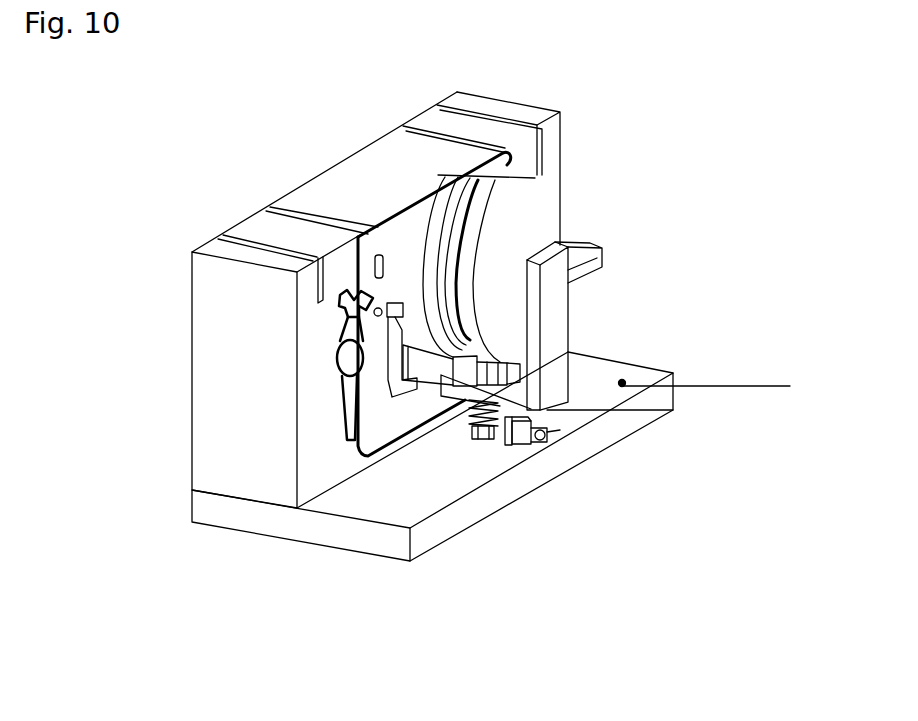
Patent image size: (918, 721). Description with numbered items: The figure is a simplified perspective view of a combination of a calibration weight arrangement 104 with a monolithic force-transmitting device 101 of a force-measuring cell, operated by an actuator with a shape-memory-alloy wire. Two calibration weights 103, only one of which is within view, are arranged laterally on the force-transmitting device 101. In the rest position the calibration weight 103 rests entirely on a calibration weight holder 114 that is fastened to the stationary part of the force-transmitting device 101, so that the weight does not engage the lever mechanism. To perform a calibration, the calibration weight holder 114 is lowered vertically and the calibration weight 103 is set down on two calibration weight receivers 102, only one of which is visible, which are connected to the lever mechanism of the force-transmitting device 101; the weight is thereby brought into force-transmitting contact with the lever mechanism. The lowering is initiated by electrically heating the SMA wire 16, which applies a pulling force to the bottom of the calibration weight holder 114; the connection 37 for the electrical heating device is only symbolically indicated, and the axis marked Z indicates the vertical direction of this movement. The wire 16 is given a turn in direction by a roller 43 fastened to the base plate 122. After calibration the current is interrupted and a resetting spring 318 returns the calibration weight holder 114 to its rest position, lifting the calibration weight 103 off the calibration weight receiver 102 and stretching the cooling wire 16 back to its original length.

The force-transmitting device 101 is at (292, 150).
The calibration weight 103 is at (530, 217).
The calibration weight arrangement 104 is at (625, 218).
The calibration weight holder 114 is at (555, 350).
The connection 37 is at (732, 390).
The SMA wire 16 is at (545, 441).
The roller 43 is at (544, 441).
The calibration weight receiver 102 is at (506, 442).
The resetting spring 318 is at (483, 440).
The base plate 122 is at (349, 538).
The Z axis Z is at (316, 383).